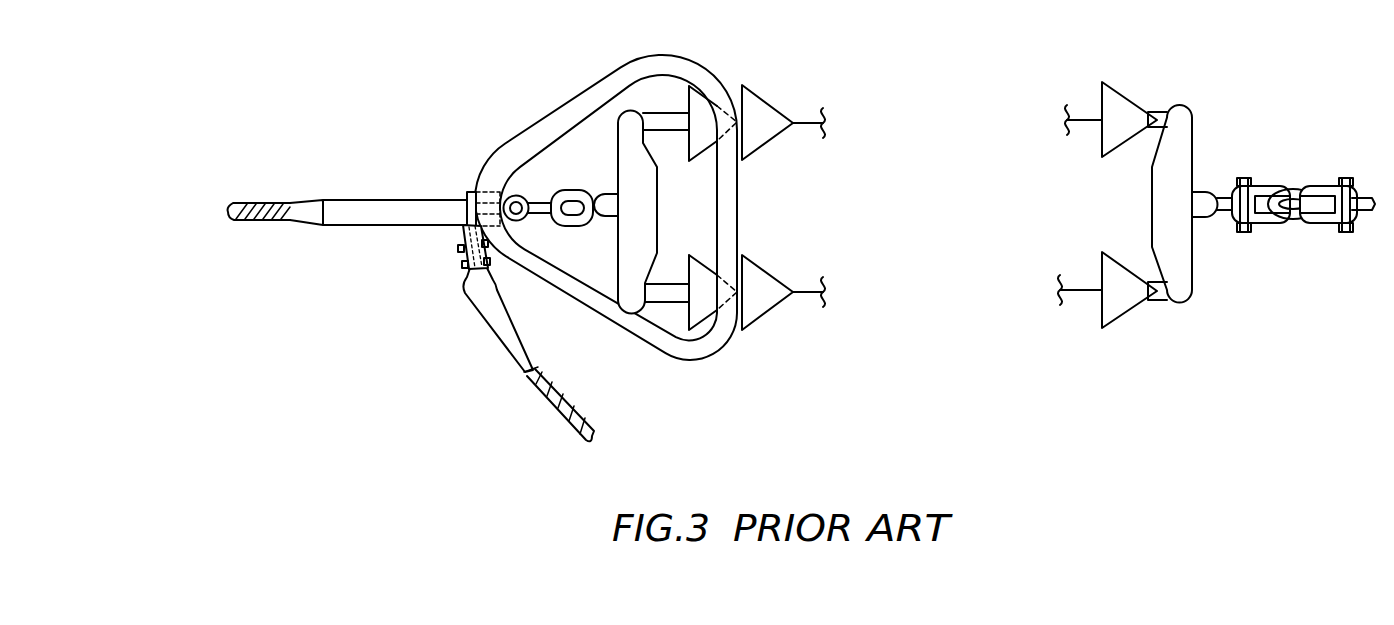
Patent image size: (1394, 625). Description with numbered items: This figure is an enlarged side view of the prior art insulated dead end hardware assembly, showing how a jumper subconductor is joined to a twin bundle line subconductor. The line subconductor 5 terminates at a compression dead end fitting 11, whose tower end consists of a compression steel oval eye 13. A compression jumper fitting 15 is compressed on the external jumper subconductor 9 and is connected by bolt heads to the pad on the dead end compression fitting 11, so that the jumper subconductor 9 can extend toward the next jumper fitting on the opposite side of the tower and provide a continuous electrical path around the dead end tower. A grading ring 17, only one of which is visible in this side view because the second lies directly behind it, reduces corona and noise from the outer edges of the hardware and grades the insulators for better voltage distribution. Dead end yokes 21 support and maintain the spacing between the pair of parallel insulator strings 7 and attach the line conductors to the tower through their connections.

The line subconductor 5 is at (254, 207).
The insulator string 7 is at (1125, 112).
The external jumper subconductor 9 is at (547, 403).
The compression dead end fitting 11 is at (380, 210).
The compression steel oval eye 13 is at (522, 194).
The compression jumper fitting 15 is at (498, 318).
The grading ring 17 is at (693, 342).
The dead end yoke 21 is at (637, 133).